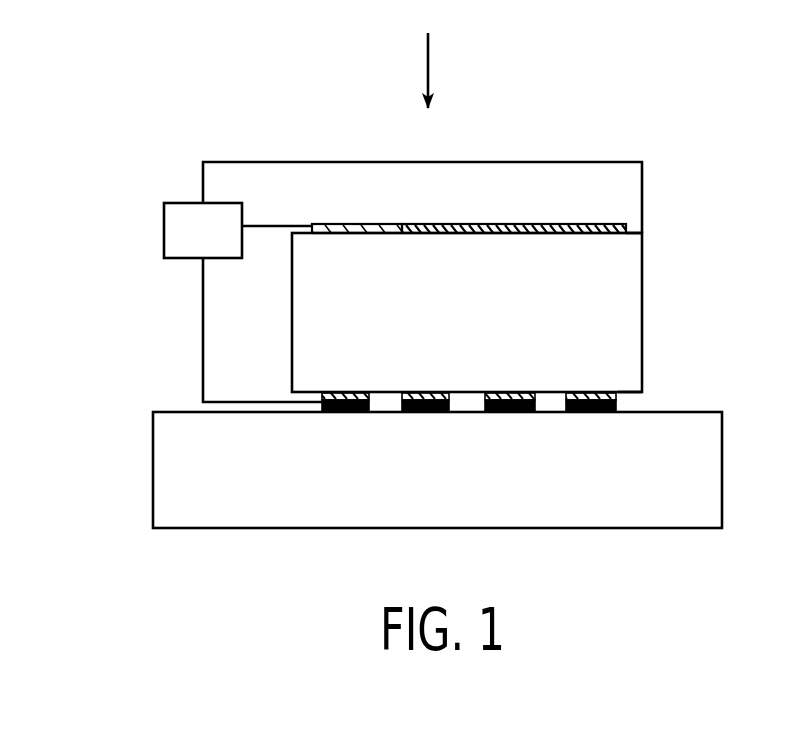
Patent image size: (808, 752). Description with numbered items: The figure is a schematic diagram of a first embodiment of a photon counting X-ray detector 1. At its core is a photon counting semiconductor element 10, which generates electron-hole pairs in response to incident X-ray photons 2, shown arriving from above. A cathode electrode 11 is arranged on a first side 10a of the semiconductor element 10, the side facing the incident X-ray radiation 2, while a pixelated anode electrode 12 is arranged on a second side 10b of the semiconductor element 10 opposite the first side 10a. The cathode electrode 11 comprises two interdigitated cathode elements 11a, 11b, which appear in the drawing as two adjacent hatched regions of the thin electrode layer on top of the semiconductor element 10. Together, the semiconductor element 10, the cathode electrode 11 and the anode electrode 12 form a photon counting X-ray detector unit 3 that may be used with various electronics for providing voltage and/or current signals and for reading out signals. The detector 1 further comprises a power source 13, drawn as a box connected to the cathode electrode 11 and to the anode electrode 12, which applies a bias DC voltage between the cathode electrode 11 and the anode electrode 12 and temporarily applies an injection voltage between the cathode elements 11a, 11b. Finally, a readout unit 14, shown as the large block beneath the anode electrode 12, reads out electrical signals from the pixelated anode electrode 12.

The photon counting X-ray detector 1 is at (690, 114).
The incident X-ray photons 2 is at (430, 72).
The photon counting X-ray detector unit 3 is at (535, 248).
The photon counting semiconductor element 10 is at (642, 320).
The first side 10a is at (626, 231).
The second side 10b is at (626, 399).
The cathode electrode 11 is at (512, 155).
The interdigitated cathode element 11a is at (327, 224).
The interdigitated cathode element 11b is at (603, 224).
The pixelated anode electrode 12 is at (646, 405).
The power source 13 is at (174, 228).
The readout unit 14 is at (166, 471).